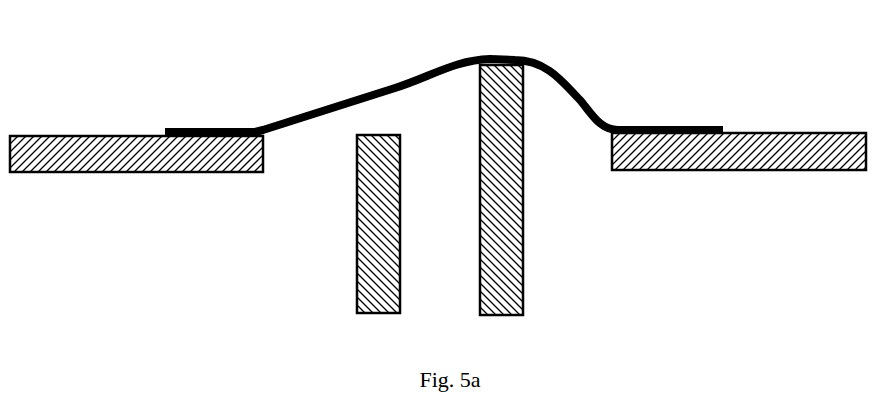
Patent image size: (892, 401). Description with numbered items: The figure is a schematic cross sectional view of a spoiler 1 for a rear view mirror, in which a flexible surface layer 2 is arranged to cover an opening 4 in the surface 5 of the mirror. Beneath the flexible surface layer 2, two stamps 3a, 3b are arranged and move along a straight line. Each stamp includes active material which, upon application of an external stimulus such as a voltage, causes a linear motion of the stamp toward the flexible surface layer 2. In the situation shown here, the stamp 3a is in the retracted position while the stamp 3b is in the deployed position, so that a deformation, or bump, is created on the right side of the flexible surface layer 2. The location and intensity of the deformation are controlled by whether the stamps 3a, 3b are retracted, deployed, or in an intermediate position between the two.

The spoiler 1 is at (618, 75).
The flexible surface layer 2 is at (307, 98).
The stamp 3a is at (345, 230).
The stamp 3b is at (537, 232).
The opening 4 is at (305, 160).
The surface 5 is at (147, 188).